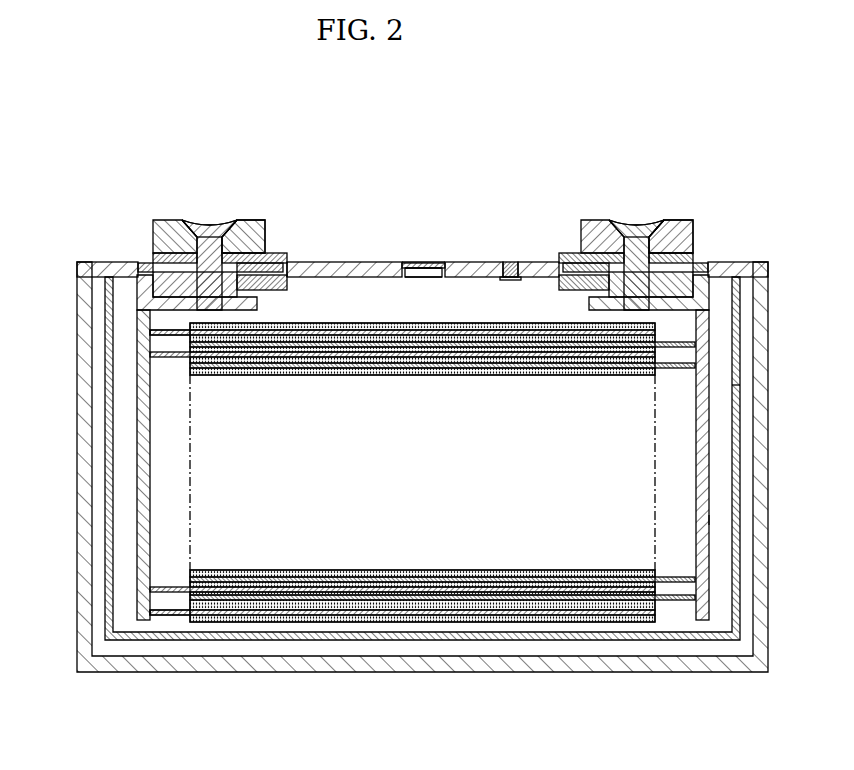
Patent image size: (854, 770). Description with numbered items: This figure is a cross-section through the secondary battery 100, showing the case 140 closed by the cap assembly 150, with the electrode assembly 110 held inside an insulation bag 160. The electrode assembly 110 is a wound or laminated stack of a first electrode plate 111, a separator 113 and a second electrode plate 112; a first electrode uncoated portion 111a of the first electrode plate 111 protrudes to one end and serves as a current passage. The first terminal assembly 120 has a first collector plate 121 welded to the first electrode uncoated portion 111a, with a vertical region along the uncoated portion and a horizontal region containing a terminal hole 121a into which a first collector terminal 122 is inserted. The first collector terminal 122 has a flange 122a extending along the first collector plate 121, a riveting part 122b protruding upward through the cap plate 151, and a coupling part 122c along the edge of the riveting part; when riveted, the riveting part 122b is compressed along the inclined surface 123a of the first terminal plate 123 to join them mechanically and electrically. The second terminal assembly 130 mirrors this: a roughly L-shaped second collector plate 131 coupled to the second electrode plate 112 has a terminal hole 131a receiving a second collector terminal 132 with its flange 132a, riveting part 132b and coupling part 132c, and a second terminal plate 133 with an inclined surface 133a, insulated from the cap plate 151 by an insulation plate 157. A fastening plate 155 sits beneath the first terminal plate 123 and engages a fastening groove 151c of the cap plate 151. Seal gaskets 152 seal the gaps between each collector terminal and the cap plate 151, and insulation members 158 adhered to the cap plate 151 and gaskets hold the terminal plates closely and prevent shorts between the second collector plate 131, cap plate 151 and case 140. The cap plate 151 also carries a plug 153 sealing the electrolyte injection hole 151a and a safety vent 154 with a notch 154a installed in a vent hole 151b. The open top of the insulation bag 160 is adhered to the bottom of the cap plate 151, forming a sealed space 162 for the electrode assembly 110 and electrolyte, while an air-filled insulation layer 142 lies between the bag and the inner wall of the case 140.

The secondary battery 100 is at (752, 98).
The electrode assembly 110 is at (510, 632).
The first electrode plate 111 is at (298, 618).
The first electrode uncoated portion 111a is at (171, 615).
The second electrode plate 112 is at (582, 620).
The separator 113 is at (438, 620).
The first terminal assembly 120 is at (224, 195).
The first collector plate 121 is at (128, 432).
The terminal hole 121a is at (150, 300).
The first collector terminal 122 is at (194, 203).
The flange 122a is at (157, 287).
The riveting part 122b is at (183, 228).
The coupling part 122c is at (173, 206).
The first terminal plate 123 is at (143, 235).
The inclined surface 123a is at (240, 223).
The second terminal assembly 130 is at (639, 190).
The second collector plate 131 is at (718, 435).
The terminal hole 131a is at (735, 307).
The second collector terminal 132 is at (662, 270).
The flange 132a is at (700, 283).
The riveting part 132b is at (652, 224).
The coupling part 132c is at (610, 210).
The second terminal plate 133 is at (709, 233).
The inclined surface 133a is at (663, 235).
The case 140 is at (757, 352).
The insulation layer 142 is at (733, 396).
The cap assembly 150 is at (517, 172).
The cap plate 151 is at (358, 263).
The electrolyte injection hole 151a is at (503, 280).
The vent hole 151b is at (420, 278).
The fastening groove 151c is at (283, 268).
The seal gasket 152 is at (298, 268).
The plug 153 is at (510, 263).
The safety vent 154 is at (442, 263).
The notch 154a is at (420, 263).
The fastening plate 155 is at (273, 255).
The insulation plate 157 is at (578, 255).
The insulation member 158 is at (290, 283).
The insulation bag 160 is at (740, 560).
The space 162 is at (706, 524).